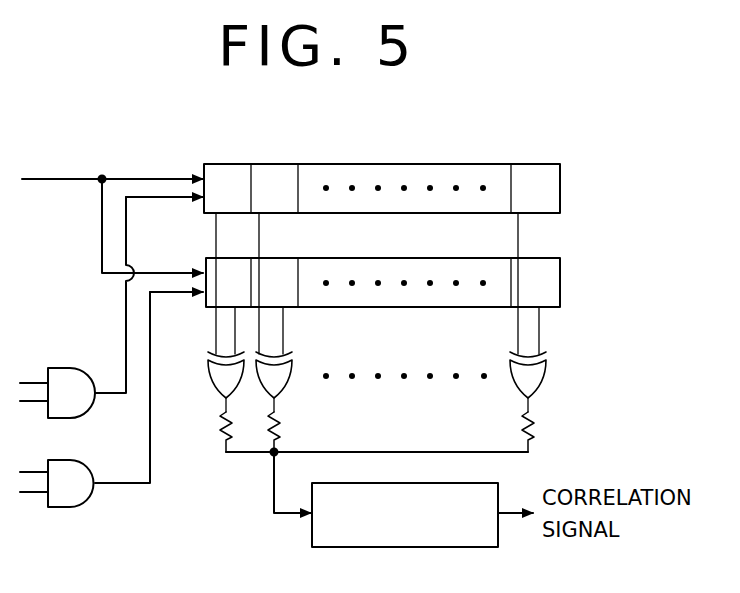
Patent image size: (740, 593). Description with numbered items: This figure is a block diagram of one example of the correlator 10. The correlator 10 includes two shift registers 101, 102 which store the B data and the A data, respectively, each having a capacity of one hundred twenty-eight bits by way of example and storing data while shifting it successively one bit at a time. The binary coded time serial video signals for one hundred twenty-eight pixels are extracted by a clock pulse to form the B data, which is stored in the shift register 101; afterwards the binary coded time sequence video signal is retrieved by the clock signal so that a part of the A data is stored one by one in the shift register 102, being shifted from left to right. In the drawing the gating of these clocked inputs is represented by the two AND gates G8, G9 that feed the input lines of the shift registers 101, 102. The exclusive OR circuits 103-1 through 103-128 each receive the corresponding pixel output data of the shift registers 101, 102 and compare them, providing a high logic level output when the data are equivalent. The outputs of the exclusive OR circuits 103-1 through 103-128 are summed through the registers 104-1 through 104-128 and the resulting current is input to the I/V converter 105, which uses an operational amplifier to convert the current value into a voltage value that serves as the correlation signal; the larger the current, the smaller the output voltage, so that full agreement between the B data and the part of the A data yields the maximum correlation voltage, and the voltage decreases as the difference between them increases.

The correlator 10 is at (330, 160).
The shift register 101 is at (388, 164).
The shift register 102 is at (378, 258).
The exclusive OR circuit 103-1 is at (208, 367).
The exclusive OR circuit 103-128 is at (545, 374).
The register 104-1 is at (222, 427).
The register 104-128 is at (536, 425).
The I/V converter 105 is at (422, 548).
The AND gate G8 is at (70, 368).
The AND gate G9 is at (68, 508).